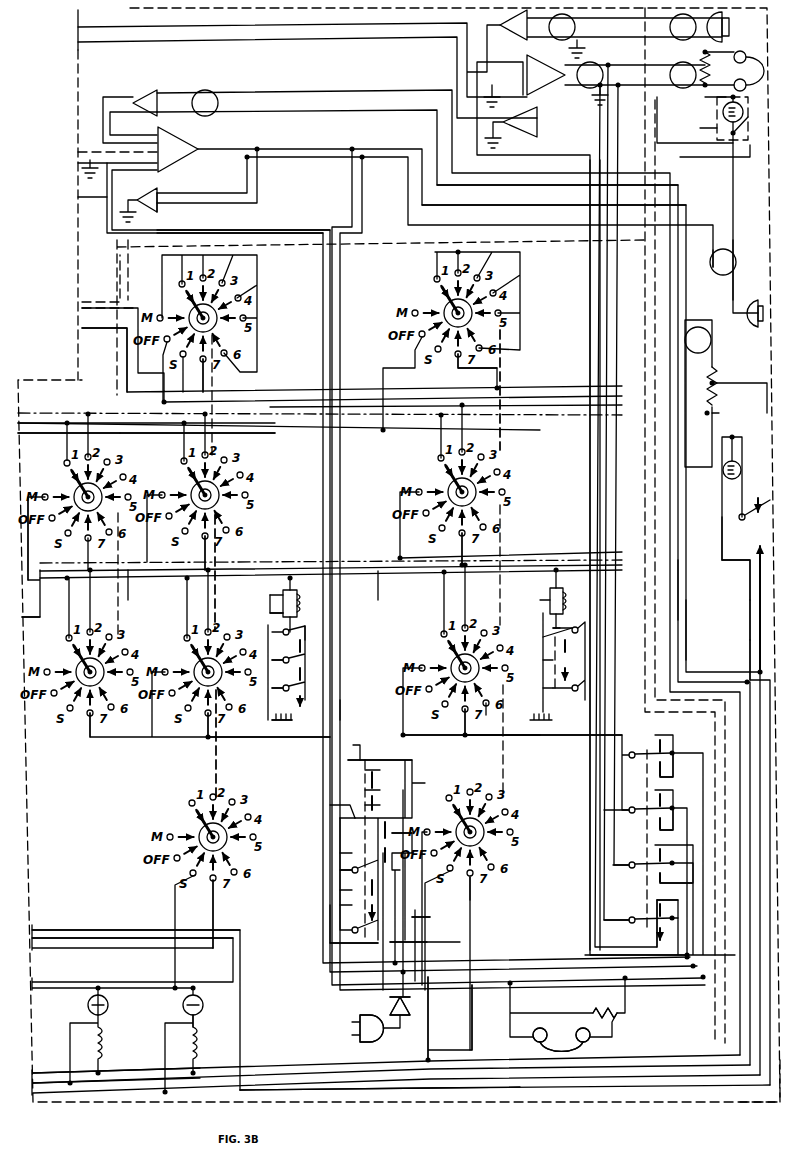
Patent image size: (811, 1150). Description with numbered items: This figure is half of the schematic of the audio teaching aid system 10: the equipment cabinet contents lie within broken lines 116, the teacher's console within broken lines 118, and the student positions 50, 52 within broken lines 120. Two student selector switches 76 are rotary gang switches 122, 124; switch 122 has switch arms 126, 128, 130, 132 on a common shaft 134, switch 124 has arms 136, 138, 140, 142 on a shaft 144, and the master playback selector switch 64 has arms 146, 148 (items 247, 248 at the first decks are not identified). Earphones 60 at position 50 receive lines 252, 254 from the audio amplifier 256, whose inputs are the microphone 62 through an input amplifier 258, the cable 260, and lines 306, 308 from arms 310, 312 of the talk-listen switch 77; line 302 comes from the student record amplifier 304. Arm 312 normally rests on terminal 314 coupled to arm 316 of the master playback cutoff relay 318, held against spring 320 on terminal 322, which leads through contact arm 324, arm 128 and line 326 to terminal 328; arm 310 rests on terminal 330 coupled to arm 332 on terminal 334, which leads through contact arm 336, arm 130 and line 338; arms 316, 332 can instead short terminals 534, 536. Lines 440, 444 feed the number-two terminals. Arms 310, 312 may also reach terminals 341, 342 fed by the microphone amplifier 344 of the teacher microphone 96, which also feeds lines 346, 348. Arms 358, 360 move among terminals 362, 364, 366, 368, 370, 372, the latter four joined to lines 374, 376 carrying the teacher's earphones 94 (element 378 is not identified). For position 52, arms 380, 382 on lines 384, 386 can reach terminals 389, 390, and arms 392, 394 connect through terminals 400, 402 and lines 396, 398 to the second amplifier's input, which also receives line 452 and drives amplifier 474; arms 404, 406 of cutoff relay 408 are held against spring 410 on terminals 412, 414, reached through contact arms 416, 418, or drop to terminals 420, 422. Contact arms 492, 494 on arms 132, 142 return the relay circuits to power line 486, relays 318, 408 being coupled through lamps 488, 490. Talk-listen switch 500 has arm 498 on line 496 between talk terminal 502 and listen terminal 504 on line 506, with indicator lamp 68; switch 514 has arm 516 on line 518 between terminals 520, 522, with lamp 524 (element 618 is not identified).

The line 452 is at (132, 27).
The broken lines 116 is at (141, 10).
The broken lines 118 is at (97, 1114).
The input amplifier 258 is at (151, 94).
The cable 260 is at (98, 152).
The audio amplifier 256 is at (184, 154).
The line 302 is at (138, 200).
The student record amplifier 304 is at (157, 206).
The line 306 is at (270, 228).
The line 308 is at (317, 228).
The coaxial cable line 252 is at (546, 197).
The coaxial cable line 254 is at (546, 217).
The moveable arm 380 is at (644, 746).
The line 386 is at (630, 64).
The amplifier 474 is at (526, 129).
The microphone 62 is at (735, 21).
The earphones 60 is at (752, 406).
The student position 52 is at (760, 50).
The talk or record terminal 520 is at (715, 97).
The line 384 is at (662, 97).
The lamp 524 is at (717, 112).
The student talk-listen switch 514 is at (698, 128).
The moveable arm 516 is at (717, 137).
The playback or listen terminal 522 is at (750, 146).
The line 396 is at (589, 271).
The line 398 is at (599, 290).
The student position 50 is at (740, 356).
The student talk-listen switch 500 is at (703, 448).
The record-indicator lamp 68 is at (724, 471).
The record or talk terminal 502 is at (741, 500).
The moveable arm 498 is at (742, 542).
The playback or listen terminal 504 is at (742, 571).
The line 518 is at (678, 604).
The line 496 is at (744, 623).
The power line 486 is at (741, 643).
The switch arm 126 is at (177, 310).
The switch arm 136 is at (440, 308).
The conductor 247 is at (201, 373).
The conductor 248 is at (456, 368).
The line 444 is at (66, 415).
The line 326 is at (38, 423).
The terminal 328 is at (160, 428).
The switching arm 146 is at (57, 484).
The switch arm 128 is at (177, 477).
The switch arm 138 is at (434, 473).
The common shaft 144 is at (500, 439).
The common shaft 134 is at (226, 541).
The contact arm 324 is at (197, 544).
The line 338 is at (388, 575).
The line 440 is at (88, 618).
The terminal 322 is at (266, 598).
The moveable arm 316 is at (269, 619).
The master playback cutoff relay 318 is at (71, 1050).
The terminal 534 is at (277, 631).
The terminal 334 is at (290, 652).
The moveable switch arm 332 is at (290, 666).
The spring 320 is at (298, 704).
The individual student talk-listen switch 77 is at (362, 709).
The moveable arm 360 is at (380, 735).
The switching arm 148 is at (72, 656).
The switch arm 130 is at (190, 648).
The switch arm 140 is at (445, 648).
The master playback cutoff relay 408 is at (153, 1044).
The terminal 412 is at (533, 604).
The moveable arm 406 is at (557, 607).
The terminal 422 is at (544, 629).
The terminal 414 is at (565, 650).
The moveable arm 404 is at (565, 673).
The contact arm 416 is at (457, 544).
The contact arm 418 is at (462, 712).
The terminal 420 is at (490, 704).
The spring 410 is at (502, 743).
The contact arm 336 is at (200, 719).
The terminal 536 is at (246, 737).
The master playback selector switch 64 is at (86, 737).
The rotary gang switch 122 is at (293, 791).
The rotary gang switch 124 is at (545, 781).
The switch arm 132 is at (198, 830).
The switch arm 142 is at (456, 803).
The student selector switch 76 is at (277, 874).
The terminal 368 is at (380, 746).
The terminal 364 is at (387, 772).
The terminal 372 is at (387, 787).
The terminal 366 is at (387, 800).
The moveable arm 358 is at (330, 805).
The terminal 362 is at (353, 826).
The terminal 370 is at (396, 841).
The terminal 341 is at (353, 852).
The moveable switch arm 310 is at (368, 872).
The terminal 330 is at (345, 889).
The terminal 342 is at (349, 905).
The moveable arm 312 is at (360, 937).
The terminal 314 is at (425, 944).
The resistor 378 is at (590, 990).
The contact arm 494 is at (472, 888).
The line 346 is at (64, 936).
The line 348 is at (111, 930).
The contact arm 492 is at (213, 875).
The terminal 389 is at (669, 774).
The moveable arm 382 is at (645, 790).
The terminal 390 is at (668, 829).
The moveable arm 392 is at (644, 842).
The terminal 400 is at (676, 870).
The moveable arm 394 is at (638, 900).
The terminal 402 is at (648, 930).
The microphone amplifier 344 is at (386, 1002).
The teacher microphone 96 is at (354, 1030).
The line 374 is at (470, 988).
The line 376 is at (510, 985).
The teacher's earphones 94 is at (539, 1036).
The electric lamp 488 is at (90, 1014).
The electric lamp 490 is at (188, 1008).
The line 506 is at (50, 1072).
The conductor 618 is at (505, 1089).
The audio teaching aid system 10 is at (760, 1094).
The broken lines 120 is at (758, 1102).